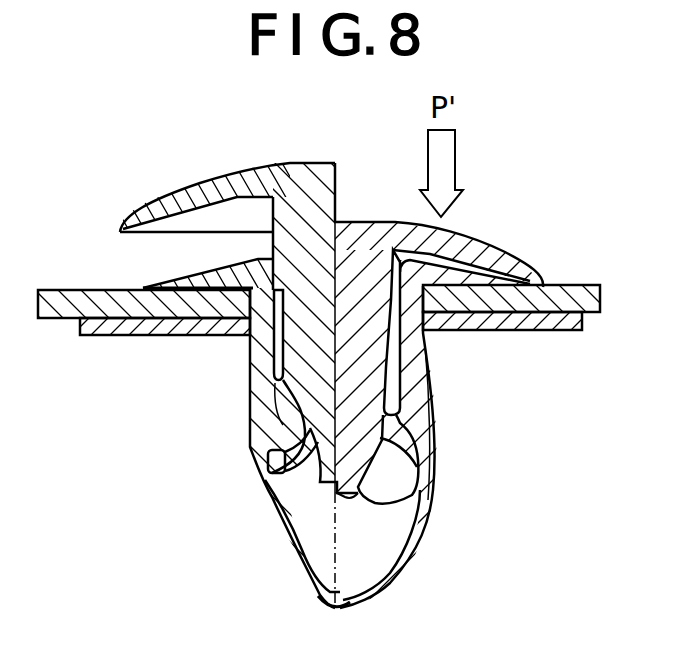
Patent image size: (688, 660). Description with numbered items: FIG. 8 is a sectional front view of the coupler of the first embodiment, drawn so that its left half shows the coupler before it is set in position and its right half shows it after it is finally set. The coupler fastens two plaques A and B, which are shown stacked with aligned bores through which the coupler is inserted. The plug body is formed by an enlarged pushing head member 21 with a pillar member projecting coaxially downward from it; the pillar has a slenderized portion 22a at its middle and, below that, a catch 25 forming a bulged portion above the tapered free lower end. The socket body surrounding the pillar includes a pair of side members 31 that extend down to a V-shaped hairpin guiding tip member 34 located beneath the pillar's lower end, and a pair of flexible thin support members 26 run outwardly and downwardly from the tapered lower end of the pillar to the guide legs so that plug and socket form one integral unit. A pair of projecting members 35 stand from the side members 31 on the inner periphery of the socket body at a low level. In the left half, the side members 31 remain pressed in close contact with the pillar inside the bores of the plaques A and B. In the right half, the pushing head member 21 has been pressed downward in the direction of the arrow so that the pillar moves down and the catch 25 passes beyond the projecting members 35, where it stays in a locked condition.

The pushing head member 21 is at (197, 182).
The slenderized portion 22a is at (275, 300).
The catch 25 is at (285, 392).
The flexible thin support members 26 is at (300, 500).
The side members 31 is at (250, 372).
The guiding tip member 34 is at (385, 585).
The projecting members 35 is at (298, 426).
The plaque A is at (68, 290).
The plaque B is at (95, 336).